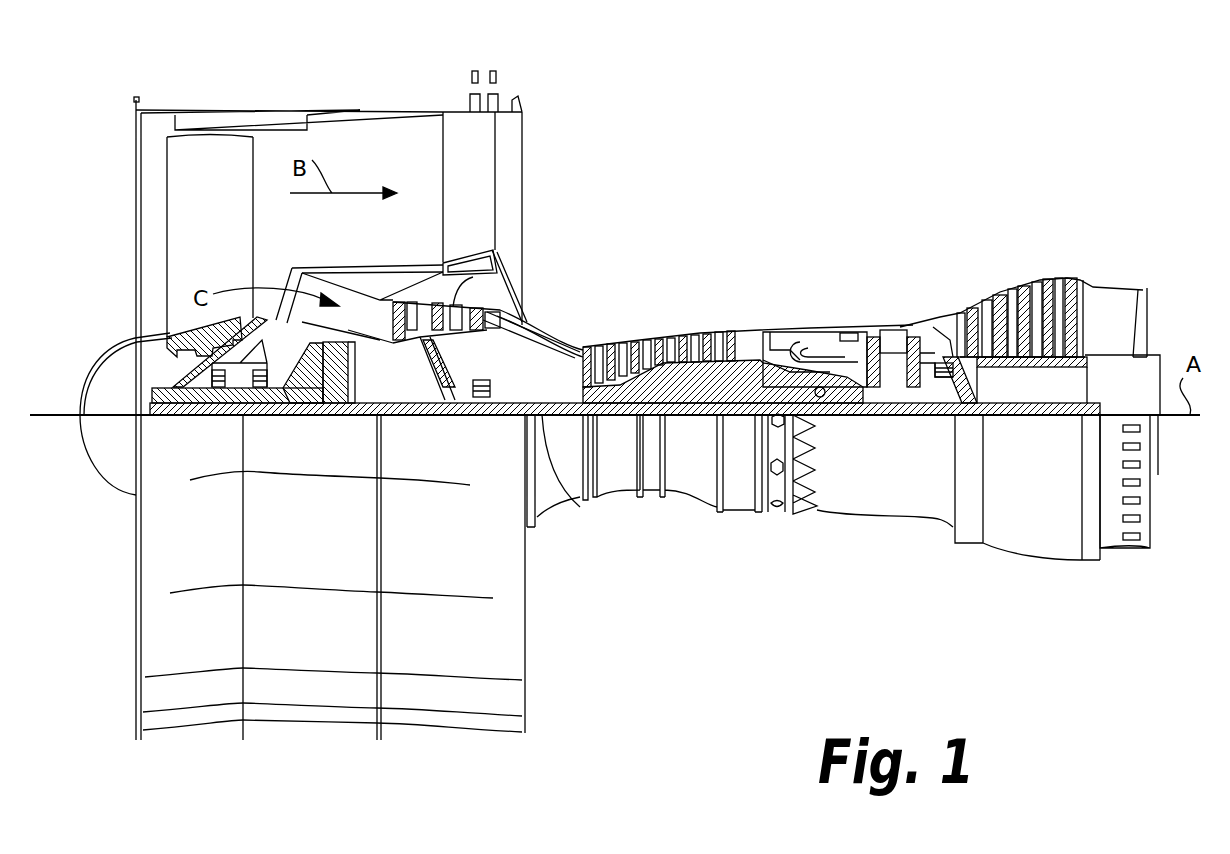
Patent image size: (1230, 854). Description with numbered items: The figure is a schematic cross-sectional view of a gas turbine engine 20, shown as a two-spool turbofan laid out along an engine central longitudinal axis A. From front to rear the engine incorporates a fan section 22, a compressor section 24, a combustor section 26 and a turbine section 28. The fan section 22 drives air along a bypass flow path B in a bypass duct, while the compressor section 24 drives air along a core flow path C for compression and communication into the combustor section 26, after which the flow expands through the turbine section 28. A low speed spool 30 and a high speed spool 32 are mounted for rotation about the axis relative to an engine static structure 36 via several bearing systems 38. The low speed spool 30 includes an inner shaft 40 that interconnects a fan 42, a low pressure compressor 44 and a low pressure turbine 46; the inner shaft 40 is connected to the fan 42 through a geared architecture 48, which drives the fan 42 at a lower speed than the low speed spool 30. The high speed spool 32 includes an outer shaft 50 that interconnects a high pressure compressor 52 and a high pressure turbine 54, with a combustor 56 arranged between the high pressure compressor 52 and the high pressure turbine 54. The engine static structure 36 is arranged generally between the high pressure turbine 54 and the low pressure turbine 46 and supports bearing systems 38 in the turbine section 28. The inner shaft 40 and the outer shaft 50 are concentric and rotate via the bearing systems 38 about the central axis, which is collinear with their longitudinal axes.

The gas turbine engine 20 is at (836, 152).
The fan section 22 is at (364, 78).
The compressor section 24 is at (810, 238).
The combustor section 26 is at (912, 238).
The turbine section 28 is at (1100, 238).
The low speed spool 30 is at (697, 418).
The high speed spool 32 is at (740, 383).
The engine static structure 36 is at (742, 512).
The bearing systems 38 is at (222, 415).
The inner shaft 40 is at (580, 507).
The fan 42 is at (217, 253).
The low pressure compressor 44 is at (513, 265).
The low pressure turbine 46 is at (1023, 297).
The geared architecture 48 is at (340, 415).
The outer shaft 50 is at (833, 395).
The high pressure compressor 52 is at (665, 383).
The high pressure turbine 54 is at (886, 330).
The combustor 56 is at (820, 352).